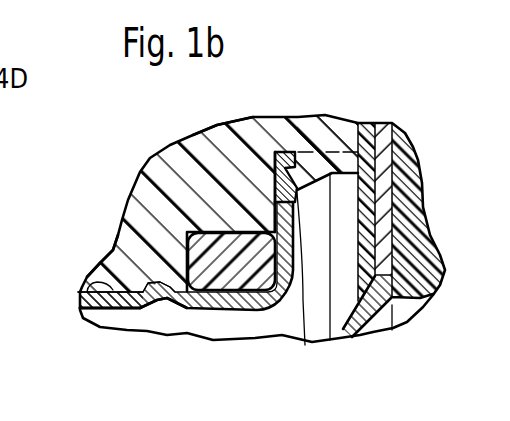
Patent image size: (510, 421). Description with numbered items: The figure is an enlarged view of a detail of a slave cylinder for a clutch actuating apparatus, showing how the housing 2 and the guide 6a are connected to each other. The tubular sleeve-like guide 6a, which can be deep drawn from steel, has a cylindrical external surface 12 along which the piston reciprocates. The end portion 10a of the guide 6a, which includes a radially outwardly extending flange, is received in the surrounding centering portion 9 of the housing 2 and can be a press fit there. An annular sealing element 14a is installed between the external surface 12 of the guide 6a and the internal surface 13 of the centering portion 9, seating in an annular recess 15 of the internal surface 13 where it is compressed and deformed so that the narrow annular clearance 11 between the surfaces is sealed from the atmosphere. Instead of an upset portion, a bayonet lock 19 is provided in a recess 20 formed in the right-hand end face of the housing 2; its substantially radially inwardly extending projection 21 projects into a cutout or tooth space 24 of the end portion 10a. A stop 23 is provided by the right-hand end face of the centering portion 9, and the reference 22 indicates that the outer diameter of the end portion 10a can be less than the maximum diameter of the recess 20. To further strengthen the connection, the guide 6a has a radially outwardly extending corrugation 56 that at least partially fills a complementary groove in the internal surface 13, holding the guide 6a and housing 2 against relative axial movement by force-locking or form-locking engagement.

The housing 2 is at (112, 207).
The guide 6a is at (110, 310).
The centering portion 9 is at (115, 250).
The end portion 10a is at (275, 203).
The clearance 11 is at (75, 329).
The internal surface 13 is at (80, 313).
The external surface 12 is at (143, 311).
The sealing element 14a is at (217, 267).
The recess 15 is at (110, 260).
The bayonet lock 19 is at (334, 138).
The recess 20 is at (318, 320).
The projection 21 is at (305, 345).
The diameter difference 22 is at (288, 158).
The stop 23 is at (215, 137).
The tooth space 24 is at (275, 191).
The corrugation 56 is at (171, 296).